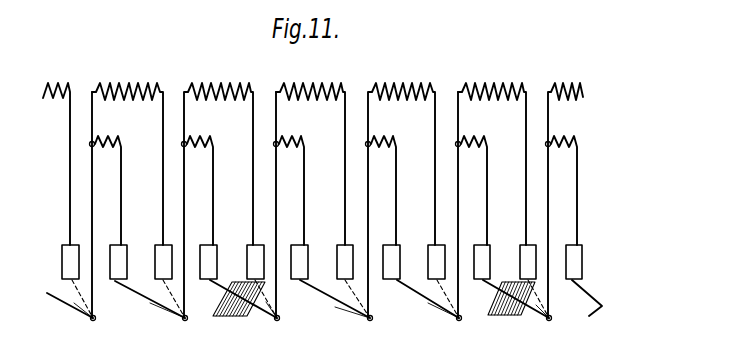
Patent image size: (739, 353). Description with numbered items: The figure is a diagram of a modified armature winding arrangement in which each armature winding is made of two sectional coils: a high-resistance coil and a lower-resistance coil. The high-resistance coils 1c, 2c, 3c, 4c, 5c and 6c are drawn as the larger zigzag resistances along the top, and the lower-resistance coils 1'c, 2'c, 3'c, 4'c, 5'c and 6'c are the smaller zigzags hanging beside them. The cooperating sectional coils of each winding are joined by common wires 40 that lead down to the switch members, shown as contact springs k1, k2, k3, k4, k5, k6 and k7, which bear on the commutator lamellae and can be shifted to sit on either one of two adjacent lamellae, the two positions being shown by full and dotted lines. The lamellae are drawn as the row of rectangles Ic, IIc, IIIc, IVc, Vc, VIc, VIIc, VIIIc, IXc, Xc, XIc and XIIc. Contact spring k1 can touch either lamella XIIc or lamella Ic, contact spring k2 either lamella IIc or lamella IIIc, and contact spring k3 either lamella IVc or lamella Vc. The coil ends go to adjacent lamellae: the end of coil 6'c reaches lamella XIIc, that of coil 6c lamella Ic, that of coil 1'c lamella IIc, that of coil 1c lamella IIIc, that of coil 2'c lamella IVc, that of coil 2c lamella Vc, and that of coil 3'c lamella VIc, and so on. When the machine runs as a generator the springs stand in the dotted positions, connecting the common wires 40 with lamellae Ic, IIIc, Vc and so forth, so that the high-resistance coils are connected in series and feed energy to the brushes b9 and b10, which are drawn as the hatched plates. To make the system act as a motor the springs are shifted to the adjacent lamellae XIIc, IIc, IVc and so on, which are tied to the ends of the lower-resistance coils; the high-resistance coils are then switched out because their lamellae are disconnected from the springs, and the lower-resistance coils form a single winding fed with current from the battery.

The sectional coil 6c is at (315, 188).
The sectional coil 1c is at (127, 152).
The sectional coil 2c is at (218, 188).
The sectional coil 3c is at (310, 152).
The sectional coil 4c is at (401, 188).
The sectional coil 5c is at (492, 152).
The sectional coil 1'c is at (106, 190).
The sectional coil 2'c is at (198, 190).
The sectional coil 3'c is at (289, 190).
The sectional coil 4'c is at (381, 190).
The sectional coil 5'c is at (472, 190).
The sectional coil 6'c is at (562, 190).
The common wire 40 is at (91, 212).
The commutator lamella Ic is at (70, 262).
The commutator lamella IIc is at (118, 262).
The commutator lamella IIIc is at (163, 262).
The commutator lamella IVc is at (208, 262).
The commutator lamella Vc is at (255, 262).
The commutator lamella VIc is at (299, 262).
The commutator lamella VIIc is at (347, 258).
The commutator lamella VIIIc is at (391, 262).
The commutator lamella IXc is at (433, 258).
The commutator lamella Xc is at (480, 261).
The commutator lamella XIc is at (527, 262).
The commutator lamella XIIc is at (573, 262).
The contact spring k1 is at (71, 301).
The contact spring k2 is at (151, 301).
The contact spring k3 is at (245, 305).
The contact spring k4 is at (336, 301).
The contact spring k5 is at (429, 301).
The contact spring k6 is at (517, 304).
The contact spring k7 is at (587, 304).
The brush b9 is at (239, 309).
The brush b10 is at (511, 309).